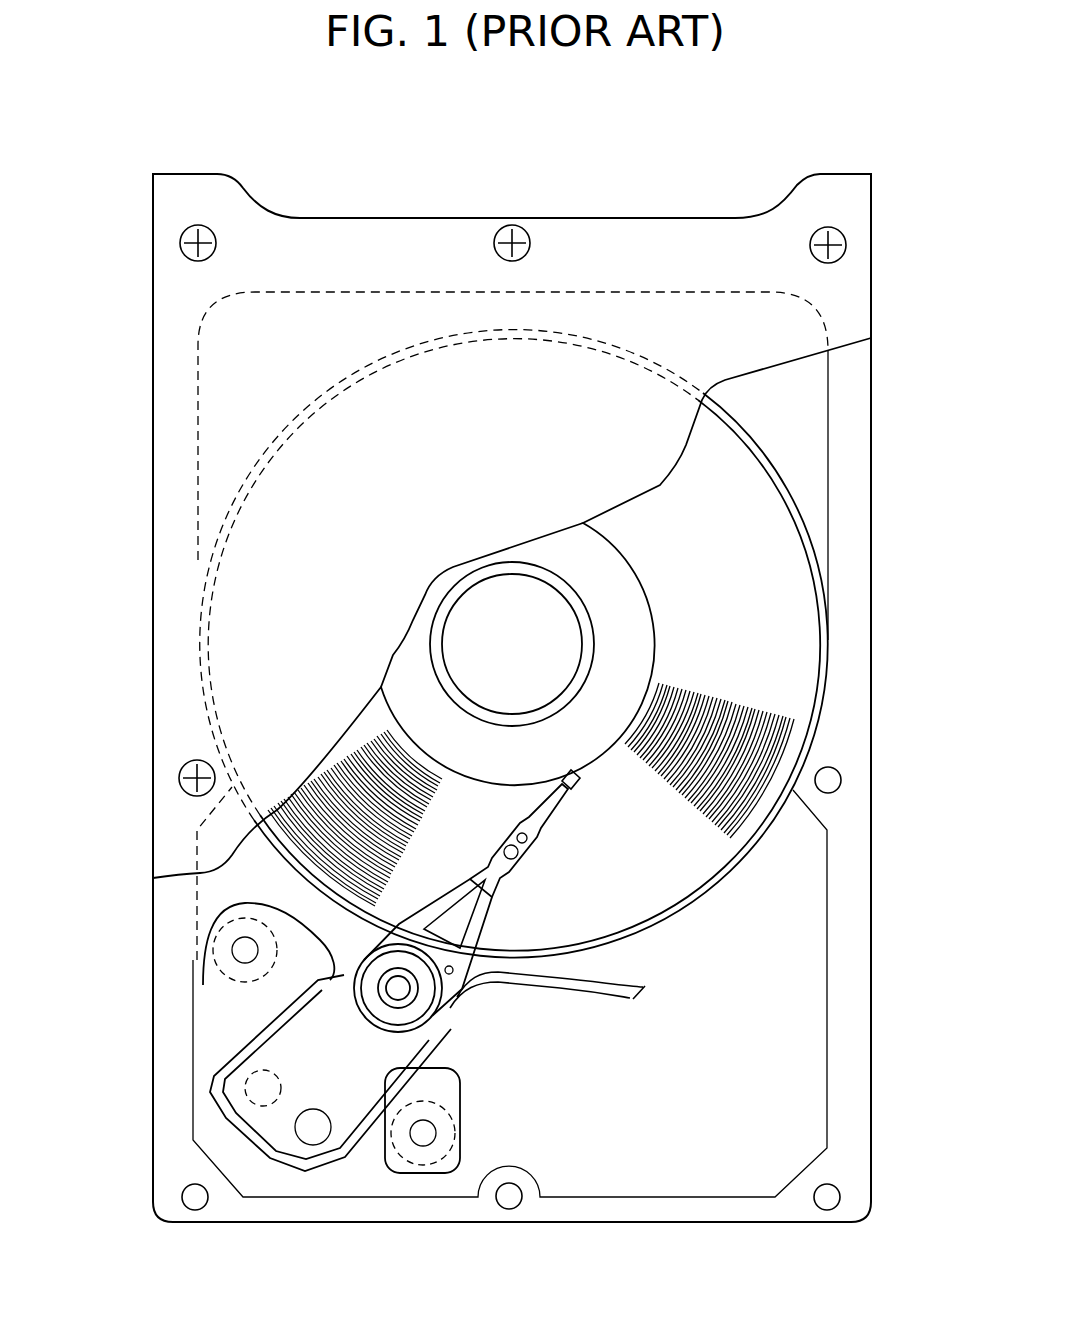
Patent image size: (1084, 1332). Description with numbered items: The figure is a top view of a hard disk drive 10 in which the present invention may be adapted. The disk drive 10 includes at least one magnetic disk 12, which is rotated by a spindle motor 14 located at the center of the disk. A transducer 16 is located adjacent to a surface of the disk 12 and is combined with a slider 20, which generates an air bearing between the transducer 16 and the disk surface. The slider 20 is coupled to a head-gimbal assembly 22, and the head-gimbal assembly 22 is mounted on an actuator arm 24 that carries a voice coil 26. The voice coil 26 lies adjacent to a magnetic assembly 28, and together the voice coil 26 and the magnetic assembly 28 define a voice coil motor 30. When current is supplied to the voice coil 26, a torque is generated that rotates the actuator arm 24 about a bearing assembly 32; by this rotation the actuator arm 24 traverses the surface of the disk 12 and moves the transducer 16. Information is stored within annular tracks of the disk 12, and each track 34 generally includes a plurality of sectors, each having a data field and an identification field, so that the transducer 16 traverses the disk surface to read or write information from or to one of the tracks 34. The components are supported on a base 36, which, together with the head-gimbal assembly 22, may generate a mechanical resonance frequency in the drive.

The hard disk drive 10 is at (693, 158).
The magnetic disk 12 is at (778, 577).
The spindle motor 14 is at (487, 620).
The transducer 16 is at (575, 786).
The slider 20 is at (548, 808).
The head-gimbal assembly 22 is at (508, 900).
The actuator arm 24 is at (307, 1007).
The voice coil 26 is at (235, 1077).
The magnetic assembly 28 is at (245, 1020).
The voice coil motor 30 is at (373, 1163).
The bearing assembly 32 is at (410, 998).
The track 34 is at (363, 770).
The base 36 is at (830, 1003).